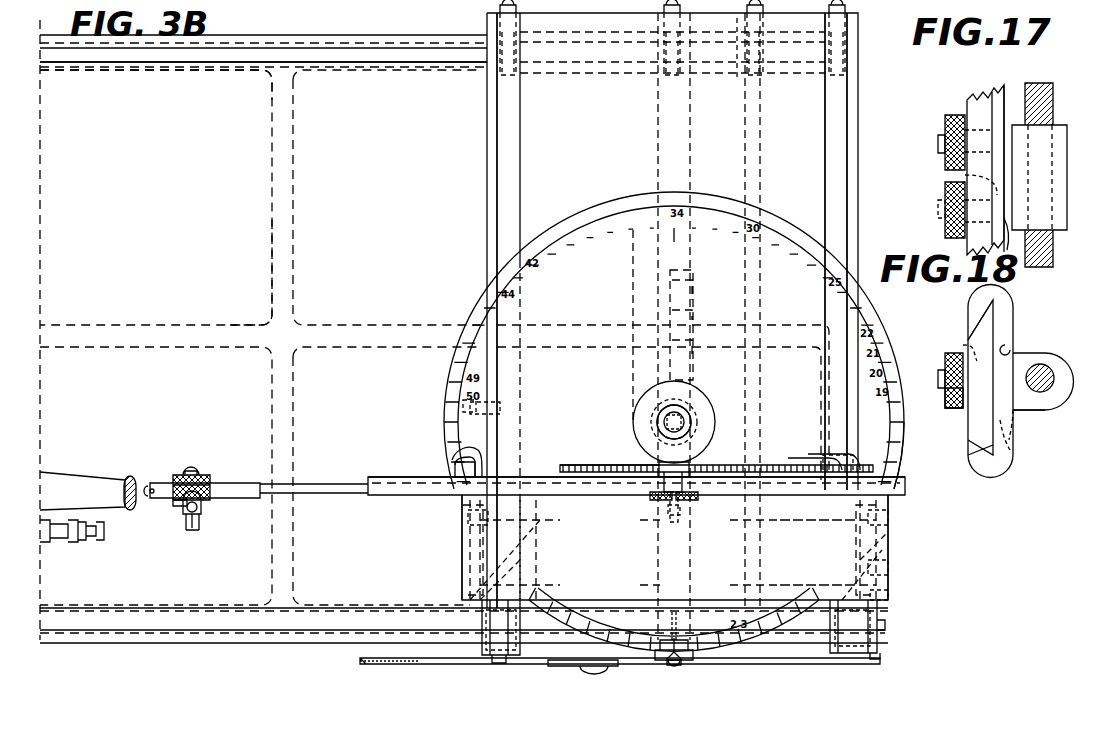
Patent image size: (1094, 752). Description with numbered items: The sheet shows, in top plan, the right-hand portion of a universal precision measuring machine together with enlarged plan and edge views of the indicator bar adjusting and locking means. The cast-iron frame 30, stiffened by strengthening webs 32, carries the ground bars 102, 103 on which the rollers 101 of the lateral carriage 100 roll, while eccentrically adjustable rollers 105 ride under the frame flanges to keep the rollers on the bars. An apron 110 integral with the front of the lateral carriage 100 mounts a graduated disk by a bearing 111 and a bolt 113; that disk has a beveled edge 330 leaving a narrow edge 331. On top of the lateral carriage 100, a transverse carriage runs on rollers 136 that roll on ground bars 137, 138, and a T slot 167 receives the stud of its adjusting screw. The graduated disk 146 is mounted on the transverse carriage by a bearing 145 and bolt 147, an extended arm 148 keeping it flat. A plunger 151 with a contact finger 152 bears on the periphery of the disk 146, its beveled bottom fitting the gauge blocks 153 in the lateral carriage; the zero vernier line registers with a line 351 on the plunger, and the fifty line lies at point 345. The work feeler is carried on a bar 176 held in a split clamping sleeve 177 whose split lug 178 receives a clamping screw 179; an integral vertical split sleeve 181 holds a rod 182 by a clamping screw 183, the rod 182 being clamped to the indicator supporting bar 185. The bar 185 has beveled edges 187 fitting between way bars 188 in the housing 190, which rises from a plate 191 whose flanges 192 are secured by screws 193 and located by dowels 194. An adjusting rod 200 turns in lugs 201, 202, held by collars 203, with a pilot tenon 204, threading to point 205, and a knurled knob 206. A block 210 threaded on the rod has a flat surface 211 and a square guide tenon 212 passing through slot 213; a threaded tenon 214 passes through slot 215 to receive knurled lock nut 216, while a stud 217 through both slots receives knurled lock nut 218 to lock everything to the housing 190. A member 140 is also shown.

In FIG. 3B, the frame 30 is at (244, 72).
In FIG. 3B, the strengthening webs 32 is at (238, 292).
In FIG. 3B, the lateral carriage 100 is at (514, 106).
In FIG. 3B, the rollers 101 is at (492, 56).
In FIG. 3B, the ground bar 102 is at (82, 628).
In FIG. 3B, the ground bar 103 is at (126, 58).
In FIG. 3B, the eccentrically adjustable rollers 105 is at (736, 30).
In FIG. 3B, the apron 110 is at (433, 652).
In FIG. 3B, the bearing 111 is at (542, 659).
In FIG. 3B, the bolt 113 is at (584, 666).
In FIG. 3B, the rollers 136 is at (512, 392).
In FIG. 3B, the ground bar 137 is at (500, 160).
In FIG. 3B, the ground bar 138 is at (825, 114).
In FIG. 3B, the housing 140 is at (505, 515).
In FIG. 3B, the bearing 145 is at (650, 396).
In FIG. 3B, the graduated disk 146 is at (550, 242).
In FIG. 3B, the bolt 147 is at (656, 422).
In FIG. 3B, the extended arm 148 is at (632, 250).
In FIG. 3B, the plunger 151 is at (680, 658).
In FIG. 3B, the contact finger 152 is at (656, 666).
In FIG. 3B, the gauge blocks 153 is at (691, 541).
In FIG. 3B, the T slot 167 is at (743, 133).
In FIG. 3B, the bar 176 is at (151, 470).
In FIG. 3B, the split clamping sleeve 177 is at (172, 498).
In FIG. 3B, the split lug 178 is at (200, 470).
In FIG. 3B, the clamping screw 179 is at (190, 472).
In FIG. 3B, the vertical split sleeve 181 is at (203, 511).
In FIG. 3B, the rod 182 is at (183, 506).
In FIG. 3B, the clamping screw 183 is at (200, 526).
In FIG. 3B, the indicator supporting bar 185 is at (359, 488).
In FIG. 17, the indicator supporting bar 185 is at (974, 100).
In FIG. 18, the indicator supporting bar 185 is at (995, 328).
In FIG. 18, the beveled edges 187 is at (990, 324).
In FIG. 18, the way bars 188 is at (965, 336).
In FIG. 3B, the indicator supporting bar housing 190 is at (350, 477).
In FIG. 17, the indicator supporting bar housing 190 is at (998, 92).
In FIG. 18, the indicator supporting bar housing 190 is at (979, 298).
In FIG. 3B, the plate 191 is at (460, 550).
In FIG. 3B, the flanges 192 is at (888, 600).
In FIG. 3B, the screws 193 is at (886, 575).
In FIG. 3B, the dowels 194 is at (466, 568).
In FIG. 3B, the adjusting rod 200 is at (632, 450).
In FIG. 17, the adjusting rod 200 is at (1046, 94).
In FIG. 18, the adjusting rod 200 is at (1058, 390).
In FIG. 3B, the lug 201 is at (452, 456).
In FIG. 3B, the lug 202 is at (830, 430).
In FIG. 3B, the collars 203 is at (454, 444).
In FIG. 3B, the pilot tenon 204 is at (905, 445).
In FIG. 3B, the point 205 is at (561, 473).
In FIG. 3B, the knurled knob 206 is at (455, 466).
In FIG. 3B, the block 210 is at (690, 462).
In FIG. 17, the block 210 is at (1052, 130).
In FIG. 18, the block 210 is at (1026, 409).
In FIG. 17, the flat surface 211 is at (1008, 252).
In FIG. 18, the flat surface 211 is at (1010, 348).
In FIG. 17, the square guide tenon 212 is at (952, 174).
In FIG. 18, the square guide tenon 212 is at (1020, 438).
In FIG. 18, the slot 213 is at (1012, 466).
In FIG. 17, the threaded tenon 214 is at (938, 204).
In FIG. 18, the threaded tenon 214 is at (939, 386).
In FIG. 18, the slot 215 is at (963, 345).
In FIG. 3B, the knurled lock nut 216 is at (684, 500).
In FIG. 17, the knurled lock nut 216 is at (946, 196).
In FIG. 18, the knurled lock nut 216 is at (948, 404).
In FIG. 17, the stud 217 is at (965, 108).
In FIG. 3B, the knurled lock nut 218 is at (650, 497).
In FIG. 17, the knurled lock nut 218 is at (945, 118).
In FIG. 3B, the beveled edge 330 is at (364, 665).
In FIG. 3B, the narrow edge 331 is at (360, 666).
In FIG. 3B, the point 345 is at (456, 408).
In FIG. 3B, the line 351 is at (676, 659).